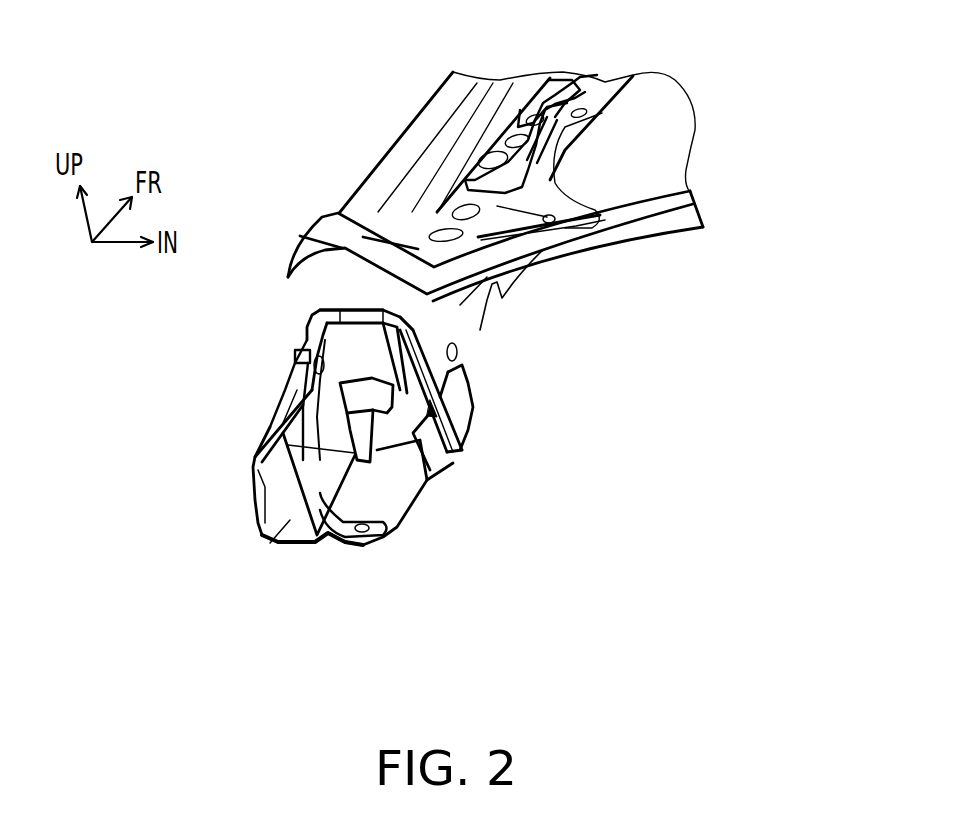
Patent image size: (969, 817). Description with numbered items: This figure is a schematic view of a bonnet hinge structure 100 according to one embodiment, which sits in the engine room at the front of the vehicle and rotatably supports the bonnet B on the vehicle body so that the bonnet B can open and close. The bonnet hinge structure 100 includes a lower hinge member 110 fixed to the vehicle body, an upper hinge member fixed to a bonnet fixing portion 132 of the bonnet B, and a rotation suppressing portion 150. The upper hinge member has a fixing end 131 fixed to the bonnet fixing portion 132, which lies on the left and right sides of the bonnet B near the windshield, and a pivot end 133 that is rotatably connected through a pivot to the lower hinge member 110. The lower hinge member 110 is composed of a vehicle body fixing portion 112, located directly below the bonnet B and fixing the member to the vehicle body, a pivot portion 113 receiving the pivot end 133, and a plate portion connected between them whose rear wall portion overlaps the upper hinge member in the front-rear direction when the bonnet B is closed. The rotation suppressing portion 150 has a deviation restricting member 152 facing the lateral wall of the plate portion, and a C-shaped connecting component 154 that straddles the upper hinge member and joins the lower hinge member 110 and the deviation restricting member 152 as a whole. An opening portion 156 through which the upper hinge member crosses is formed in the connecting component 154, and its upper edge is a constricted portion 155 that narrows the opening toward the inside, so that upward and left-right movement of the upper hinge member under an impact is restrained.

The bonnet hinge structure 100 is at (765, 541).
The lower hinge member 110 is at (253, 497).
The vehicle body fixing portion 112 is at (383, 531).
The pivot portion 113 is at (290, 373).
The fixing end 131 is at (556, 226).
The bonnet fixing portion 132 is at (437, 157).
The pivot end 133 is at (303, 327).
The rotation suppressing portion 150 is at (578, 367).
The deviation restricting member 152 is at (463, 420).
The connecting component 154 is at (450, 370).
The constricted portion 155 is at (317, 307).
The opening portion 156 is at (363, 353).
The bonnet B is at (360, 205).